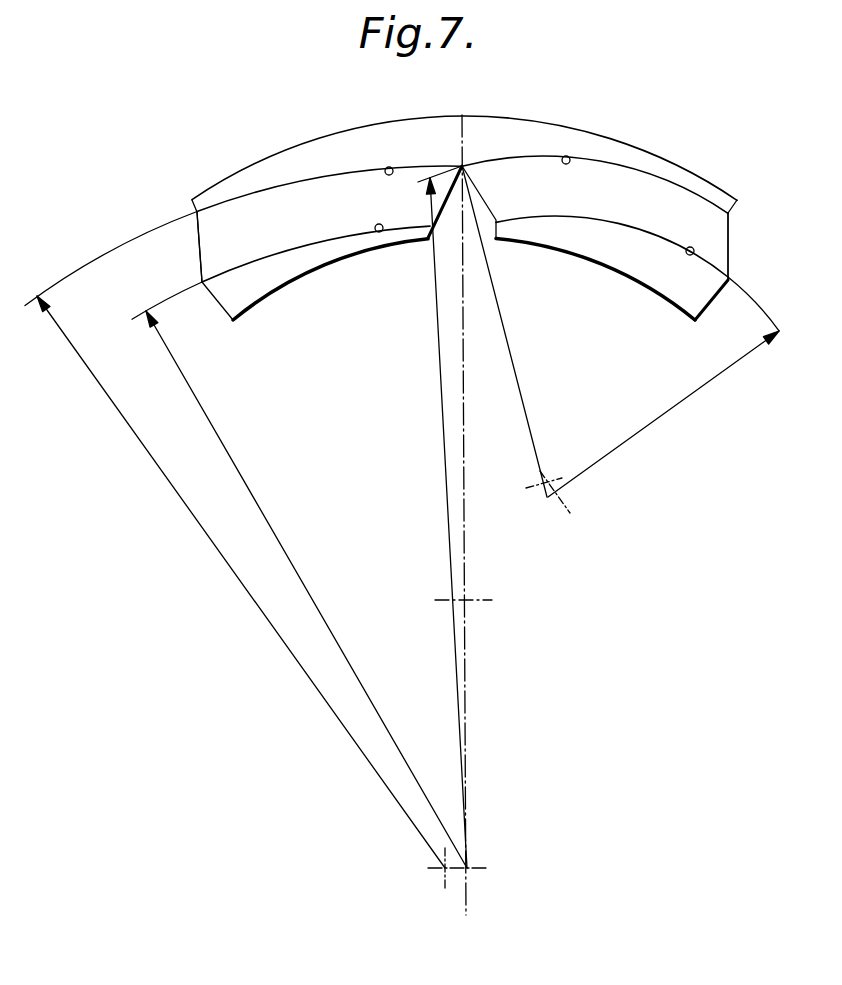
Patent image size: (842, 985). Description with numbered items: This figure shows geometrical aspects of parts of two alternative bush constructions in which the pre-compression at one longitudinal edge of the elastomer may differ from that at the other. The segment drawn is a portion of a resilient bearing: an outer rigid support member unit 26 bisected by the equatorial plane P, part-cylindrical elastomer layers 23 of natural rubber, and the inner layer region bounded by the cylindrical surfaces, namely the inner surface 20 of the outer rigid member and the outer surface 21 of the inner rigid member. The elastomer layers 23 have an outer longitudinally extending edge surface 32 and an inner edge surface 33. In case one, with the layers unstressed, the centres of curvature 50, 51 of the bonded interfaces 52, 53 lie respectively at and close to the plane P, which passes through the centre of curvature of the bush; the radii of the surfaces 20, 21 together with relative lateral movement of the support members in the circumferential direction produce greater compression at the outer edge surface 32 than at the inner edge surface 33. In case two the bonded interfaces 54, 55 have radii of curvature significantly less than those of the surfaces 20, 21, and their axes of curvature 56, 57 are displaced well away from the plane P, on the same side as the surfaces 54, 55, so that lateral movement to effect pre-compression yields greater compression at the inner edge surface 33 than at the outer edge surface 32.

The cylindrical shaped inner surface 20 is at (256, 163).
The rigid outer support member unit 26 is at (445, 145).
The part-cylindrical shaped layer of elastomeric material 23 is at (317, 225).
The cylindrical outer surface 21 is at (309, 328).
The outer longitudinally extending edge surface 32 is at (199, 258).
The inner edge surface 33 is at (434, 214).
The bonded interface 52 is at (378, 232).
The bonded interface 53 is at (386, 167).
The bonded interface 54 is at (688, 255).
The bonded interface 55 is at (569, 157).
The centre of curvature 50 is at (470, 873).
The centre of curvature 51 is at (445, 873).
The axis of curvature 56 is at (556, 496).
The axis of curvature 57 is at (538, 485).
The equatorial plane P is at (462, 450).